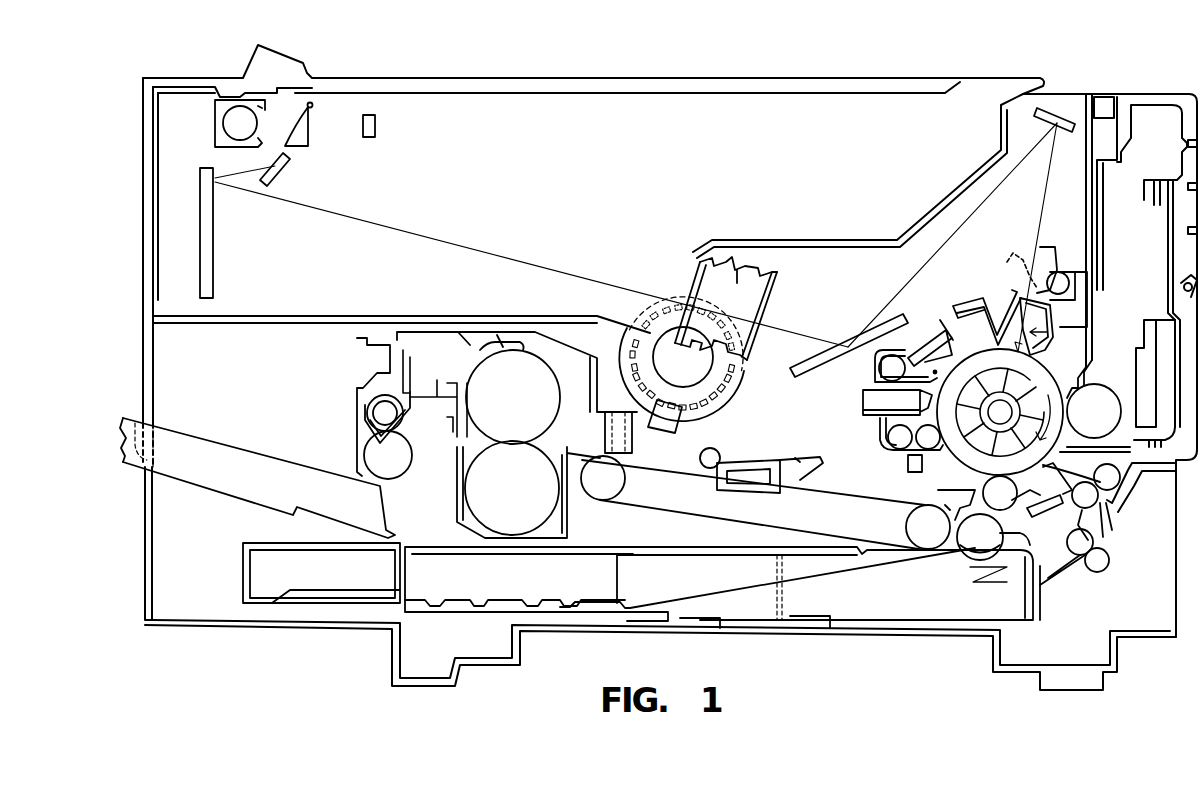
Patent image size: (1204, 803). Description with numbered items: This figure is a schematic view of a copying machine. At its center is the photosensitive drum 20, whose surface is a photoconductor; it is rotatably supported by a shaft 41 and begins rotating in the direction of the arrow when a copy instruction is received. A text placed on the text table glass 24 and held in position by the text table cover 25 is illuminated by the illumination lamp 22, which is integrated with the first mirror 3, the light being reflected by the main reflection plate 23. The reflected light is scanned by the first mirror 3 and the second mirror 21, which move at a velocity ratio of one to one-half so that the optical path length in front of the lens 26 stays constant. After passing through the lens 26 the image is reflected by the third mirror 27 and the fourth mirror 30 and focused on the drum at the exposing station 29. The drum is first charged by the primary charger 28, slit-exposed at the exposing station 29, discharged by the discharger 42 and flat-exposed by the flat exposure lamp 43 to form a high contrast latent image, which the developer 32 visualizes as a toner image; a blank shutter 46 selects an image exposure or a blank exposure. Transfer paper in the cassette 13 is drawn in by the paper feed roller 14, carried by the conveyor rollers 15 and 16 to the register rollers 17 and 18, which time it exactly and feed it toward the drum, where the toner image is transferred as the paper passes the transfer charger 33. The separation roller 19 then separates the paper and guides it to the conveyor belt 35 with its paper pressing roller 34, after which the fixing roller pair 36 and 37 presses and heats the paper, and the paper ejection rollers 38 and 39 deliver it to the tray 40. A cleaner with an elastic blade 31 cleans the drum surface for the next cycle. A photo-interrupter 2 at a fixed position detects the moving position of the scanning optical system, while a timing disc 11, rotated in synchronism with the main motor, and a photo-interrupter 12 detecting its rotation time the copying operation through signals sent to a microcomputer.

The photo-interrupter 2 is at (377, 125).
The first mirror 3 is at (288, 164).
The timing disc 11 is at (742, 384).
The photo-interrupter 12 is at (673, 423).
The cassette 13 is at (245, 567).
The paper feed roller 14 is at (980, 550).
The conveyor roller 15 is at (1078, 558).
The conveyor roller 16 is at (1105, 568).
The register roller 17 is at (1113, 479).
The register roller 18 is at (1098, 505).
The separation roller 19 is at (999, 490).
The photosensitive drum 20 is at (973, 457).
The second mirror 21 is at (212, 257).
The illumination lamp 22 is at (221, 127).
The main reflection plate 23 is at (308, 130).
The text table glass 24 is at (417, 90).
The text table cover 25 is at (402, 78).
The lens 26 is at (693, 263).
The third mirror 27 is at (808, 368).
The primary charger 28 is at (918, 343).
The exposing station 29 is at (1020, 296).
The fourth mirror 30 is at (1050, 121).
The elastic blade 31 is at (875, 418).
The developer 32 is at (1098, 398).
The transfer charger 33 is at (1047, 517).
The paper pressing roller 34 is at (760, 462).
The conveyor belt 35 is at (662, 456).
The fixing roller 36 is at (509, 388).
The fixing roller 37 is at (528, 489).
The paper ejection roller 38 is at (405, 470).
The paper ejection roller 39 is at (368, 414).
The tray 40 is at (208, 443).
The shaft 41 is at (1003, 404).
The discharger 42 is at (1047, 332).
The flat exposure lamp 43 is at (1060, 272).
The blank shutter 46 is at (1040, 248).